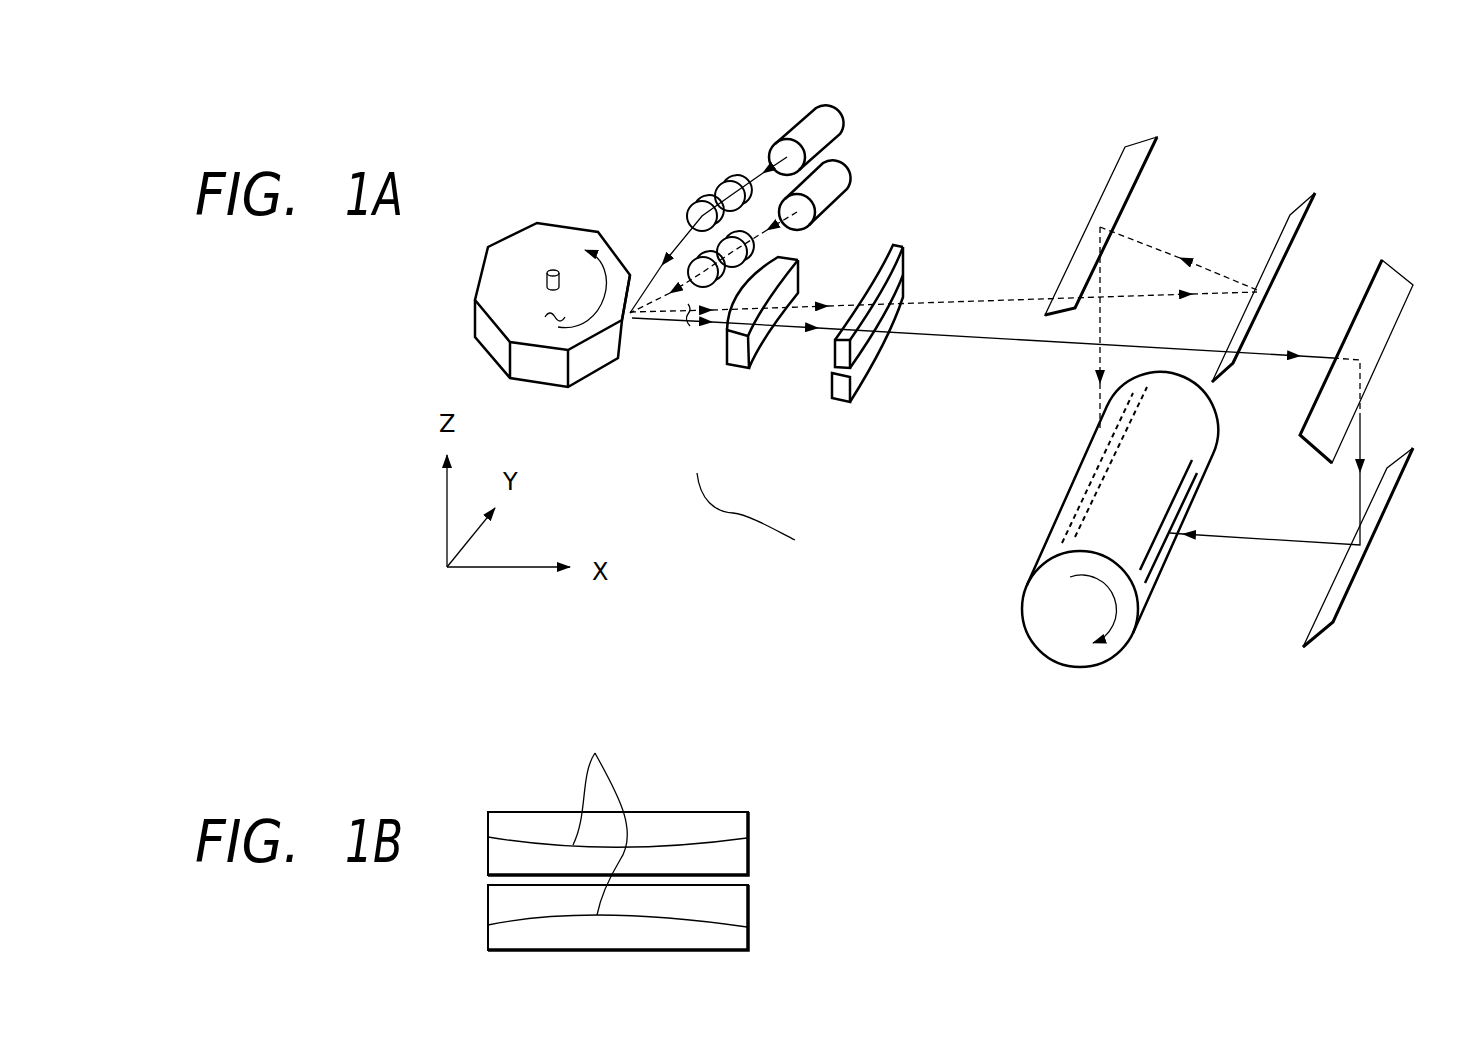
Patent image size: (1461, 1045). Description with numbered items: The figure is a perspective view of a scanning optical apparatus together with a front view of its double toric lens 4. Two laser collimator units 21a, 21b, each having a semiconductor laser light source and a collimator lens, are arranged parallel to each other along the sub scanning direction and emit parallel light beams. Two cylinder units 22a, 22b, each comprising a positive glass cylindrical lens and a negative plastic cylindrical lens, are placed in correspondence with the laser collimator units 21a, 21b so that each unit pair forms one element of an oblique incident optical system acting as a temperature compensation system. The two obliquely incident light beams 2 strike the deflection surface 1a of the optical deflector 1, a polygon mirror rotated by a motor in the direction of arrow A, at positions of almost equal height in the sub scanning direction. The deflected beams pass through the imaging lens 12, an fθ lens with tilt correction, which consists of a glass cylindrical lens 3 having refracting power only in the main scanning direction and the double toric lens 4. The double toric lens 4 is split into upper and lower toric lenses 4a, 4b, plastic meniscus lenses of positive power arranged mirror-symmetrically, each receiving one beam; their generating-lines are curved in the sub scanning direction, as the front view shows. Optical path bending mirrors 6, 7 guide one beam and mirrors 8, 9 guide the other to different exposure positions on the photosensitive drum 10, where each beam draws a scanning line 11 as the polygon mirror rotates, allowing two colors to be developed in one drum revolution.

In FIG. 1A, the optical deflector 1 is at (488, 282).
In FIG. 1A, the deflection surface 1a is at (630, 313).
In FIG. 1A, the obliquely incident light beams 2 is at (690, 328).
In FIG. 1A, the cylindrical lens 3 is at (733, 358).
In FIG. 1A, the double toric lens 4 is at (836, 389).
In FIG. 1B, the double toric lens 4 is at (738, 795).
In FIG. 1A, the toric lens 4a is at (845, 398).
In FIG. 1A, the toric lens 4b is at (830, 358).
In FIG. 1A, the optical path bending mirror 6 is at (1397, 313).
In FIG. 1A, the optical path bending mirror 7 is at (1395, 478).
In FIG. 1A, the optical path bending mirror 8 is at (1296, 222).
In FIG. 1A, the optical path bending mirror 9 is at (1130, 178).
In FIG. 1A, the photosensitive drum 10 is at (1036, 636).
In FIG. 1A, the scanning line 11 is at (1147, 548).
In FIG. 1A, the imaging lens 12 is at (746, 512).
In FIG. 1A, the laser collimator unit 21a is at (832, 108).
In FIG. 1A, the laser collimator unit 21b is at (848, 178).
In FIG. 1A, the cylinder unit 22a is at (695, 207).
In FIG. 1A, the cylinder unit 22b is at (690, 270).